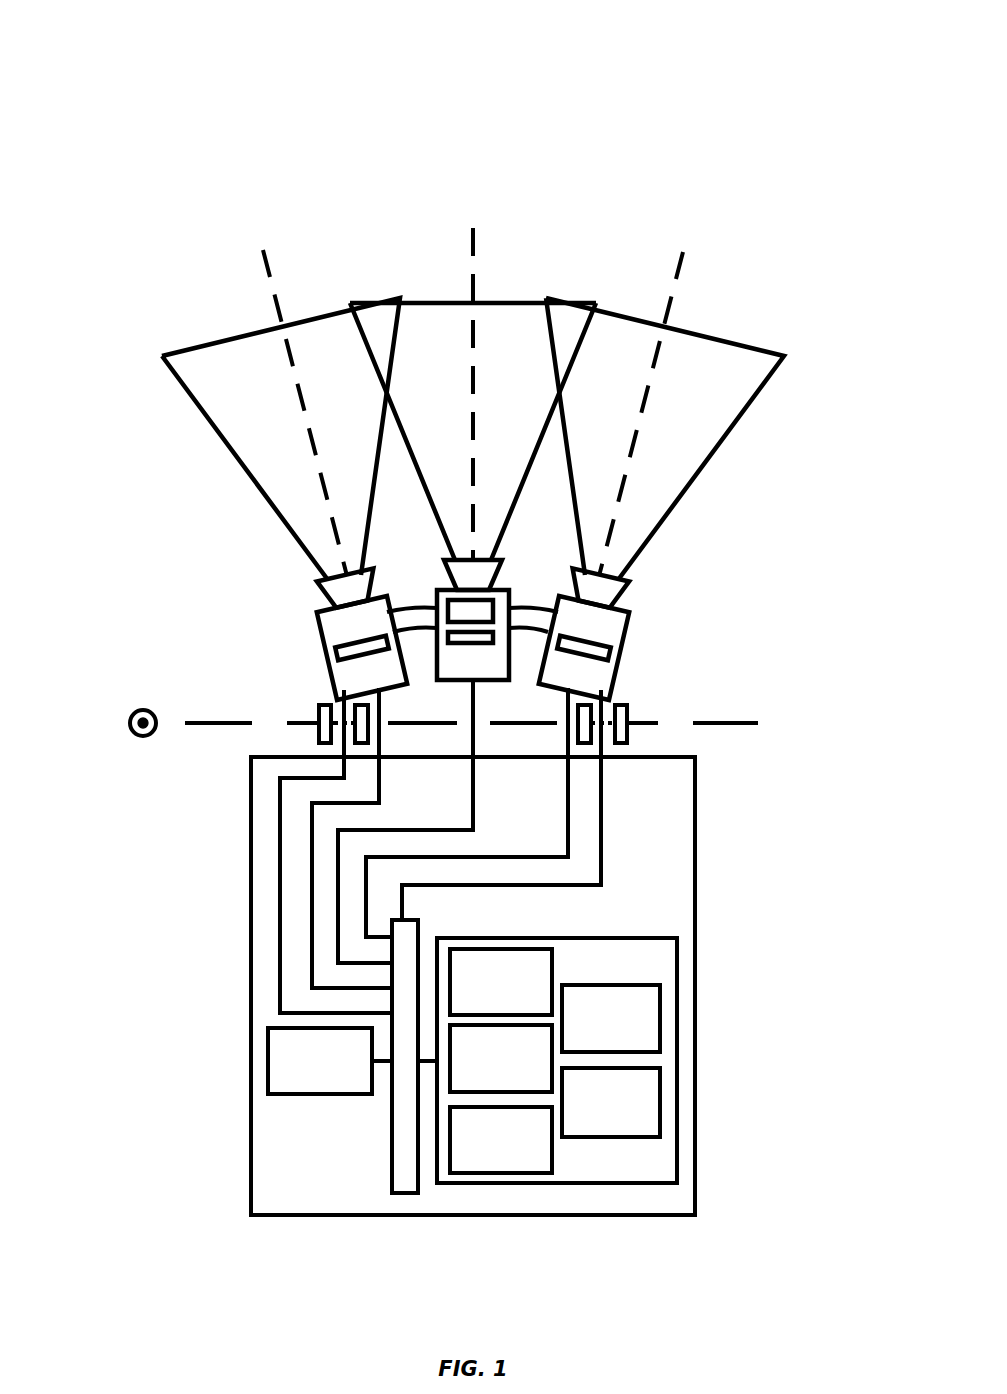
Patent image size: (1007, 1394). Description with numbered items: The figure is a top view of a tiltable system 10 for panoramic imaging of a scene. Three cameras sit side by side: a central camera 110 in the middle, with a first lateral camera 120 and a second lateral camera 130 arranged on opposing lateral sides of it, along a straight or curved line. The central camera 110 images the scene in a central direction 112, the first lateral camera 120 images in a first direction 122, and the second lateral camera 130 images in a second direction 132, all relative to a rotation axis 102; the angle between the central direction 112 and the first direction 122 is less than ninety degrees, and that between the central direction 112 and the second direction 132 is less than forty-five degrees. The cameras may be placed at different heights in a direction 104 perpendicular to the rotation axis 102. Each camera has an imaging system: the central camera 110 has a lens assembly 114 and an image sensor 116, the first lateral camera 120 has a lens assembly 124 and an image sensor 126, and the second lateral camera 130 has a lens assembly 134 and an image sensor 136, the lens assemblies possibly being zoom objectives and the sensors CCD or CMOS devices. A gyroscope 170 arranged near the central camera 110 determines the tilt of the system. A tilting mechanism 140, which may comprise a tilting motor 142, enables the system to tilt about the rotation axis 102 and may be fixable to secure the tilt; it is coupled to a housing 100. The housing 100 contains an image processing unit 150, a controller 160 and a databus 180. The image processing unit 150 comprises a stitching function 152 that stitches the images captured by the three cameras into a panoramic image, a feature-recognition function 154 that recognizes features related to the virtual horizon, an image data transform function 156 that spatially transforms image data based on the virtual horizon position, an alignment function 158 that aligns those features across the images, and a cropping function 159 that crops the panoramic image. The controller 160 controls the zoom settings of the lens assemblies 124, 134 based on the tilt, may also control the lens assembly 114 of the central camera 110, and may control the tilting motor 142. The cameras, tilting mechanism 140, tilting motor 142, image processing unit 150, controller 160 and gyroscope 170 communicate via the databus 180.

The tiltable system 10 is at (128, 150).
The housing 100 is at (658, 895).
The rotation axis 102 is at (745, 717).
The direction perpendicular to the rotation axis 104 is at (131, 712).
The central camera 110 is at (471, 609).
The central direction 112 is at (474, 228).
The lens assembly 114 is at (452, 570).
The image sensor 116 is at (470, 637).
The gyroscope 170 is at (472, 609).
The first lateral camera 120 is at (270, 628).
The first direction 122 is at (268, 257).
The lens assembly 124 is at (333, 586).
The image sensor 126 is at (345, 644).
The second lateral camera 130 is at (691, 615).
The second direction 132 is at (683, 253).
The lens assembly 134 is at (607, 595).
The image sensor 136 is at (593, 653).
The tilting mechanism 140 is at (475, 726).
The tilting motor 142 is at (317, 703).
The image processing unit 150 is at (557, 1117).
The stitching function 152 is at (501, 982).
The feature-recognition function 154 is at (501, 1058).
The image data transform function 156 is at (501, 1140).
The alignment function 158 is at (611, 1018).
The cropping function 159 is at (611, 1102).
The controller 160 is at (320, 1061).
The databus 180 is at (408, 1172).